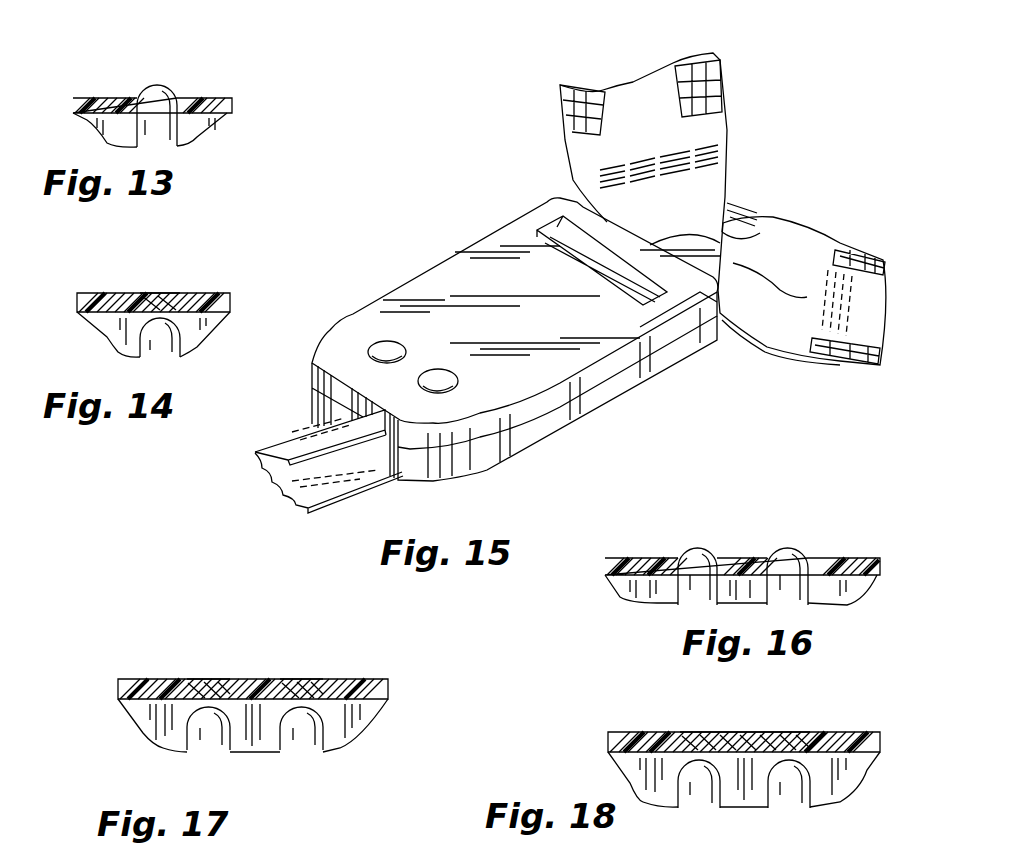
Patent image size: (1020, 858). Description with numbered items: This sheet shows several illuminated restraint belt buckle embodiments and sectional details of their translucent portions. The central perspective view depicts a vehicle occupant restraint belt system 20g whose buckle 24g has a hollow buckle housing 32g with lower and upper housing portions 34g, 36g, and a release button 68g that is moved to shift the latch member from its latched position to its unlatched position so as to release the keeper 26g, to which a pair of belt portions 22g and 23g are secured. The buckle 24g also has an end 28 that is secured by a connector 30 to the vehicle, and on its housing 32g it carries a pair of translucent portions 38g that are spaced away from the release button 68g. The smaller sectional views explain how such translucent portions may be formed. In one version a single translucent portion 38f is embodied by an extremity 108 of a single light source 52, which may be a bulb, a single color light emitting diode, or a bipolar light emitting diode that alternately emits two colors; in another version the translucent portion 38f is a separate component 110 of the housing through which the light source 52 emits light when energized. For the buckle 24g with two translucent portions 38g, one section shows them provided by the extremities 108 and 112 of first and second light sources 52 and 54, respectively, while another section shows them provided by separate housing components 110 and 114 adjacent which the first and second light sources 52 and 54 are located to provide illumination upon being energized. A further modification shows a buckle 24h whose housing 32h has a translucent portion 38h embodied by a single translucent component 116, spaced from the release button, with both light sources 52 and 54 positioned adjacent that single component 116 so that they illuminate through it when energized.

In FIG. 15, the vehicle occupant restraint belt system 20g is at (470, 203).
In FIG. 15, the belt portion 22g is at (722, 88).
In FIG. 15, the belt portion 23g is at (857, 250).
In FIG. 15, the buckle 24g is at (452, 280).
In FIG. 18, the restraint belt buckle 24h is at (735, 722).
In FIG. 15, the keeper 26g is at (752, 205).
In FIG. 15, the end 28 is at (290, 440).
In FIG. 15, the connector 30 is at (330, 476).
In FIG. 15, the buckle housing 32g is at (568, 410).
In FIG. 16, the buckle housing 32g is at (604, 557).
In FIG. 17, the buckle housing 32g is at (116, 674).
In FIG. 18, the housing 32h is at (604, 726).
In FIG. 15, the side wall 34g is at (622, 380).
In FIG. 15, the end wall 36g is at (508, 410).
In FIG. 13, the translucent portion 38f is at (143, 80).
In FIG. 14, the translucent portion 38f is at (174, 290).
In FIG. 15, the translucent portions 38g is at (434, 368).
In FIG. 16, the translucent portions 38g is at (768, 553).
In FIG. 17, the translucent portions 38g is at (275, 676).
In FIG. 18, the translucent portion 38h is at (696, 730).
In FIG. 13, the light source 52 is at (180, 128).
In FIG. 14, the light source 52 is at (195, 338).
In FIG. 16, the light source 52 is at (668, 591).
In FIG. 17, the light source 52 is at (172, 736).
In FIG. 18, the light source 52 is at (672, 788).
In FIG. 16, the light source 54 is at (822, 586).
In FIG. 17, the light source 54 is at (335, 735).
In FIG. 18, the light source 54 is at (812, 795).
In FIG. 15, the release button 68g is at (548, 215).
In FIG. 13, the extremity 108 is at (158, 88).
In FIG. 16, the extremity 108 is at (693, 548).
In FIG. 14, the separate component 110 is at (143, 294).
In FIG. 17, the separate component 110 is at (190, 676).
In FIG. 16, the extremity 112 is at (798, 548).
In FIG. 17, the separate component 114 is at (318, 674).
In FIG. 18, the translucent component 116 is at (797, 730).